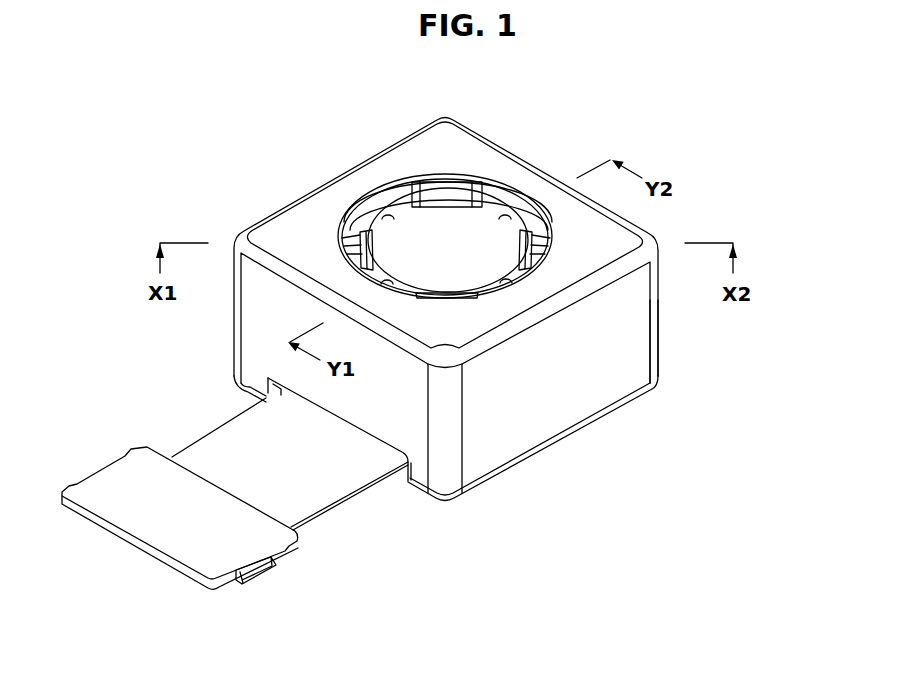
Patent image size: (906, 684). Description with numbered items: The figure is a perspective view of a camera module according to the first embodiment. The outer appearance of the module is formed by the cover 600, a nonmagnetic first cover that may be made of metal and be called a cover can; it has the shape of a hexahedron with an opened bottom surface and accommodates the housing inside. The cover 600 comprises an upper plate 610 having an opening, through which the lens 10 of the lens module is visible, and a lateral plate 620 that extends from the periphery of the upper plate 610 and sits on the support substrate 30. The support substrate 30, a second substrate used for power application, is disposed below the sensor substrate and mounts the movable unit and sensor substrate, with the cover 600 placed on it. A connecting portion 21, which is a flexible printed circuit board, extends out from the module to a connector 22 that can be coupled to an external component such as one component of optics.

The cover 600 is at (452, 293).
The lens 10 is at (418, 232).
The upper plate 610 is at (466, 157).
The lateral plate 620 is at (628, 342).
The support substrate 30 is at (579, 431).
The connecting portion 21 is at (313, 482).
The connector 22 is at (252, 583).